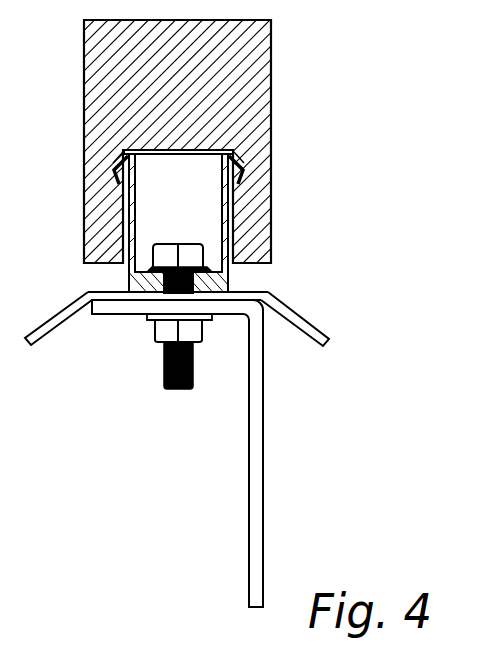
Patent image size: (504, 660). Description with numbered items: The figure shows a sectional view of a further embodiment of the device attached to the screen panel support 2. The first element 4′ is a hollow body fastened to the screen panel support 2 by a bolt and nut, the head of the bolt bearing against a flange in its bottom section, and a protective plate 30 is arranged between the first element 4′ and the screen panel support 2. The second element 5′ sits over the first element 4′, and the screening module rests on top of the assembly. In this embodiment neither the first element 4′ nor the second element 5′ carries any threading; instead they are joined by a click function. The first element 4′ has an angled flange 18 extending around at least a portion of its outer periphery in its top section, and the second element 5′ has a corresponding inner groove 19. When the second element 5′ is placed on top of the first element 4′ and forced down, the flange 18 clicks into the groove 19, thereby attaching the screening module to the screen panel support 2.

The second element 5′ is at (250, 90).
The first element 4′ is at (231, 275).
The angled flange 18 is at (240, 157).
The inner groove 19 is at (118, 189).
The protective plate 30 is at (322, 329).
The screen panel support 2 is at (256, 463).